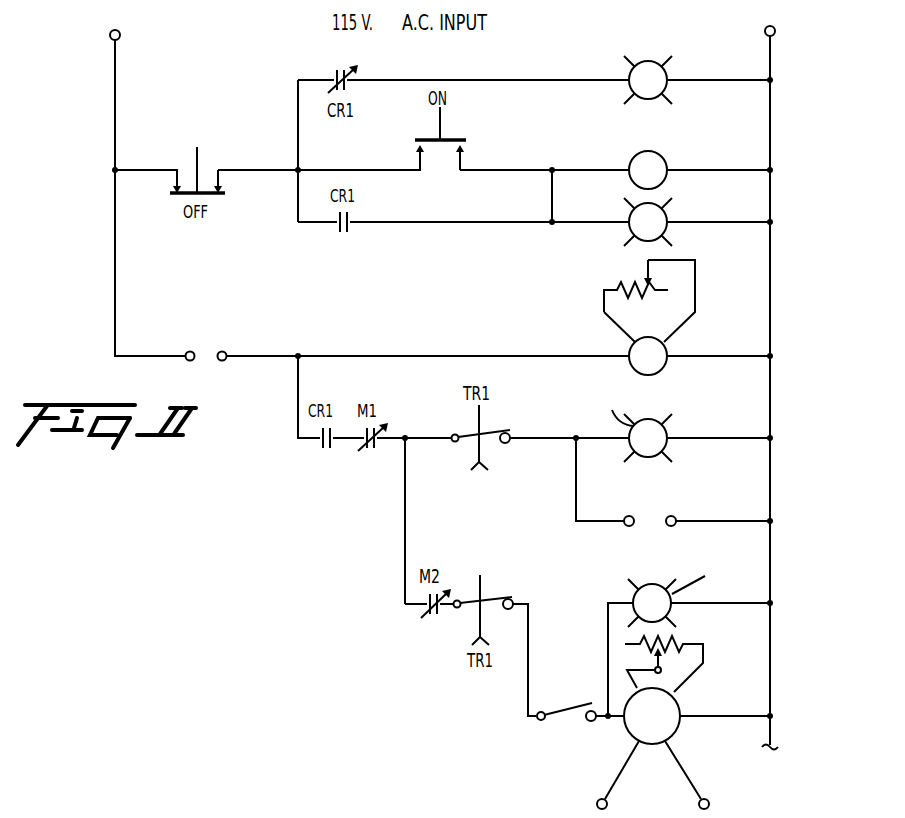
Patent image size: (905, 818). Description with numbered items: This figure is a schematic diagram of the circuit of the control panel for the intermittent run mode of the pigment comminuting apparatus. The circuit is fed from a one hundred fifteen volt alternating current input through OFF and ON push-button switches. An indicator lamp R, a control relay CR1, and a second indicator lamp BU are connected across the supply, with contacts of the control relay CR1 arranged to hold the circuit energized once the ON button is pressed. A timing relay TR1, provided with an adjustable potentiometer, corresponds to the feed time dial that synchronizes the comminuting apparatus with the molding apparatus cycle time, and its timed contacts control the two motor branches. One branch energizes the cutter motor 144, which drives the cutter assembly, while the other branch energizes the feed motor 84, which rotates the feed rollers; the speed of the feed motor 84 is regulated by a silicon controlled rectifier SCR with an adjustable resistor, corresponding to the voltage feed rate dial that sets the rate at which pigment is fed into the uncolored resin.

The motor 144 is at (662, 436).
The motor 84 is at (634, 596).
The red indicator lamp R is at (648, 80).
The control relay CR1 is at (648, 170).
The blue indicator lamp BU is at (648, 222).
The timing relay TR1 is at (649, 317).
The silicon controlled rectifier speed control SCR is at (683, 722).